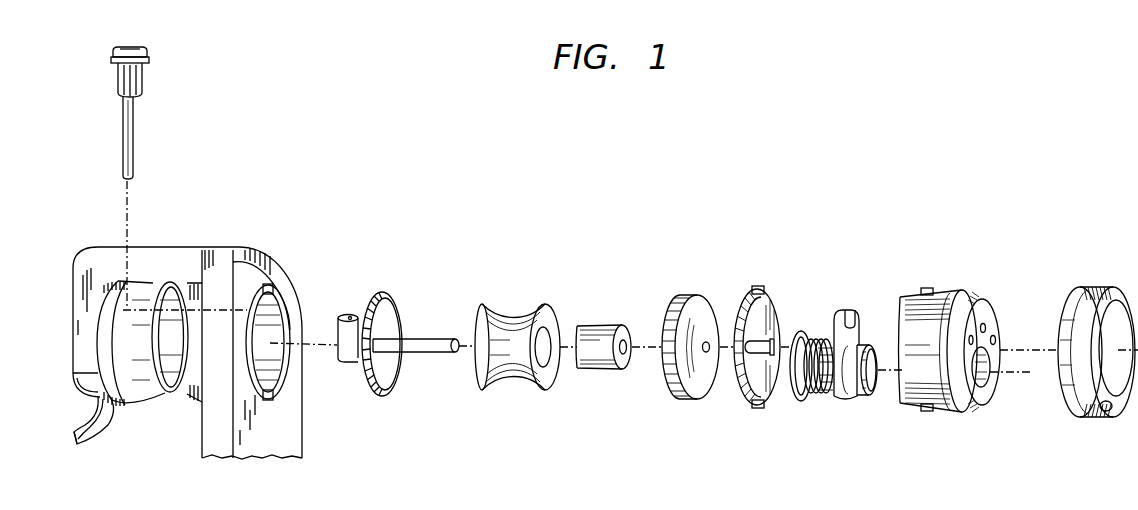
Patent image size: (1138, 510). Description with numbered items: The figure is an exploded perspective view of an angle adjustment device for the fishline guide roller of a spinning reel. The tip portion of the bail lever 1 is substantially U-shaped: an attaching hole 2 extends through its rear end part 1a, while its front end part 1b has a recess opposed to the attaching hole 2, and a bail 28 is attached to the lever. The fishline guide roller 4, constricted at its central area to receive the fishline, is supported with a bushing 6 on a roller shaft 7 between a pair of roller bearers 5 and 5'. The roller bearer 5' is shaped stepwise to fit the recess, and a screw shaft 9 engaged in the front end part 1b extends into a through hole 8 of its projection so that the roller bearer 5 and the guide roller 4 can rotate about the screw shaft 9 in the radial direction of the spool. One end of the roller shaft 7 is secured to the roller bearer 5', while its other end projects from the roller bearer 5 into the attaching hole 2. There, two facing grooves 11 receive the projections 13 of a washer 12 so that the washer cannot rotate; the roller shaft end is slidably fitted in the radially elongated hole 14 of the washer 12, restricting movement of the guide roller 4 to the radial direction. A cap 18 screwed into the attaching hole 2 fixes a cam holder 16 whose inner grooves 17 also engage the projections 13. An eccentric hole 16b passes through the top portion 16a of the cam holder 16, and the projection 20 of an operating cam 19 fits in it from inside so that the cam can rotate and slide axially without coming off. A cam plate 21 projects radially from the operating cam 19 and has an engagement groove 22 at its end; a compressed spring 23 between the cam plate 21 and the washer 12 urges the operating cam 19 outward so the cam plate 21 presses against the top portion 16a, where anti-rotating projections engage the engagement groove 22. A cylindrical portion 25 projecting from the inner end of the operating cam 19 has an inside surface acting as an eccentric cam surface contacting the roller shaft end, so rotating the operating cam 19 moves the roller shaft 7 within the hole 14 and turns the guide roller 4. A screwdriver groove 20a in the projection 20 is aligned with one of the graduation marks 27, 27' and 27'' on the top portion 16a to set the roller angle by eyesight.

The bail lever 1 is at (188, 242).
The rear end part 1a is at (263, 247).
The front end part 1b is at (82, 262).
The attaching hole 2 is at (275, 338).
The fishline guide roller 4 is at (516, 302).
The roller bearer 5 is at (690, 321).
The roller bearer 5' is at (385, 323).
The bushing 6 is at (600, 325).
The roller shaft 7 is at (423, 338).
The through hole 8 is at (353, 315).
The screw shaft 9 is at (144, 177).
The grooves 11 is at (274, 287).
The washer 12 is at (776, 297).
The projections 13 is at (757, 287).
The hole 14 is at (757, 356).
The cam holder 16 is at (958, 282).
The top portion 16a is at (982, 303).
The eccentric hole 16b is at (990, 378).
The grooves 17 is at (927, 289).
The cap 18 is at (1110, 280).
The operating cam 19 is at (849, 412).
The projection 20 is at (873, 352).
The groove 20a is at (877, 381).
The cam plate 21 is at (867, 315).
The engagement groove 22 is at (850, 317).
The compressed spring 23 is at (798, 399).
The cylindrical portion 25 is at (818, 362).
The graduation mark 27 is at (1008, 301).
The graduation mark 27' is at (1008, 318).
The graduation mark 27'' is at (1025, 330).
The bail 28 is at (88, 437).